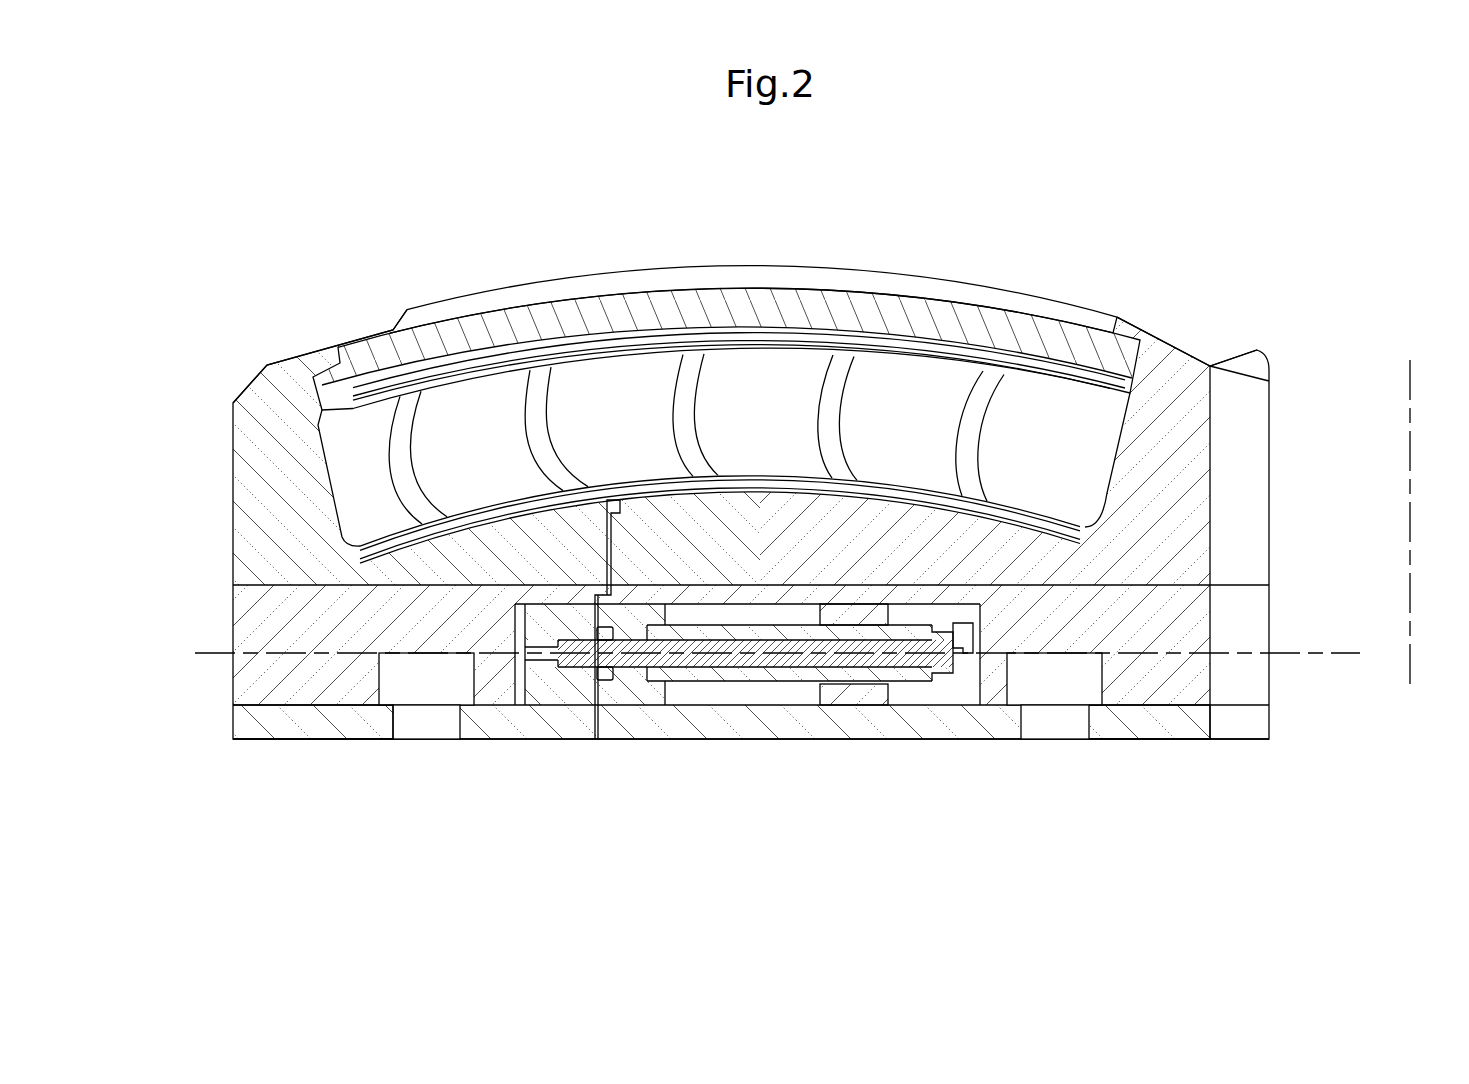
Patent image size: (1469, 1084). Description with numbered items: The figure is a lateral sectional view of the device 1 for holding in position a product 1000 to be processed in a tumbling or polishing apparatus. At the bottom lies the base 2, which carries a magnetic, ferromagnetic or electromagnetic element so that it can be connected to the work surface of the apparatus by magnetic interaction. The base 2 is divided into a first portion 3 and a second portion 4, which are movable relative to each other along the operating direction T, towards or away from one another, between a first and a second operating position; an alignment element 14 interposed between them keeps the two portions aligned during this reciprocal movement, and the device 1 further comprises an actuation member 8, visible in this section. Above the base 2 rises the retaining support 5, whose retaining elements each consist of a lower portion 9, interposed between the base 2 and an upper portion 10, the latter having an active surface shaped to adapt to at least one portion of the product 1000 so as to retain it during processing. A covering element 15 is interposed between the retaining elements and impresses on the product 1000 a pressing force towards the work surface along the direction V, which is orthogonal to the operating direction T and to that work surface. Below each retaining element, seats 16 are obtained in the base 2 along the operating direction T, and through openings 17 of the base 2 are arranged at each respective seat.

The device 1 is at (1300, 217).
The base 2 is at (660, 765).
The first portion 3 is at (345, 730).
The second portion 4 is at (1107, 730).
The retaining support 5 is at (265, 367).
The actuation member 8 is at (733, 693).
The lower portion 9 is at (248, 605).
The upper portion 10 is at (263, 472).
The alignment element 14 is at (963, 638).
The covering element 15 is at (518, 298).
The seats 16 is at (392, 677).
The through openings 17 is at (438, 727).
The product to be processed 1000 is at (870, 413).
The operating direction T is at (170, 700).
The orthogonal direction V is at (1448, 415).